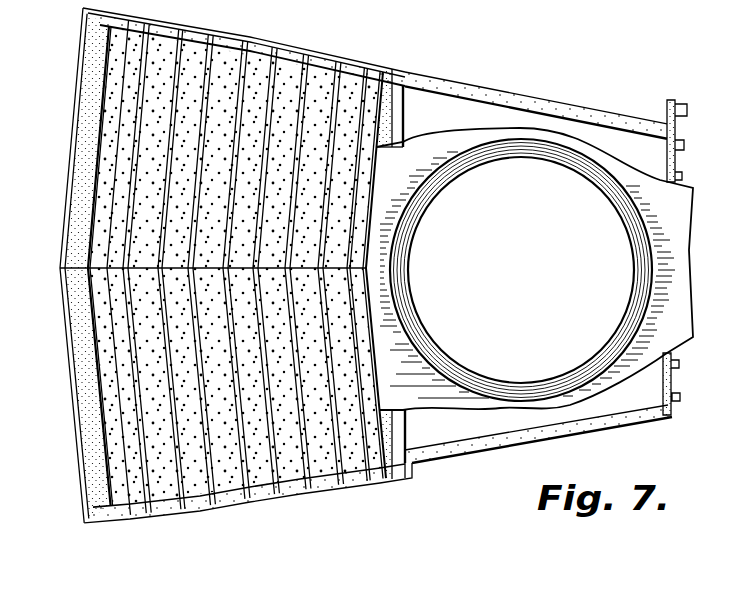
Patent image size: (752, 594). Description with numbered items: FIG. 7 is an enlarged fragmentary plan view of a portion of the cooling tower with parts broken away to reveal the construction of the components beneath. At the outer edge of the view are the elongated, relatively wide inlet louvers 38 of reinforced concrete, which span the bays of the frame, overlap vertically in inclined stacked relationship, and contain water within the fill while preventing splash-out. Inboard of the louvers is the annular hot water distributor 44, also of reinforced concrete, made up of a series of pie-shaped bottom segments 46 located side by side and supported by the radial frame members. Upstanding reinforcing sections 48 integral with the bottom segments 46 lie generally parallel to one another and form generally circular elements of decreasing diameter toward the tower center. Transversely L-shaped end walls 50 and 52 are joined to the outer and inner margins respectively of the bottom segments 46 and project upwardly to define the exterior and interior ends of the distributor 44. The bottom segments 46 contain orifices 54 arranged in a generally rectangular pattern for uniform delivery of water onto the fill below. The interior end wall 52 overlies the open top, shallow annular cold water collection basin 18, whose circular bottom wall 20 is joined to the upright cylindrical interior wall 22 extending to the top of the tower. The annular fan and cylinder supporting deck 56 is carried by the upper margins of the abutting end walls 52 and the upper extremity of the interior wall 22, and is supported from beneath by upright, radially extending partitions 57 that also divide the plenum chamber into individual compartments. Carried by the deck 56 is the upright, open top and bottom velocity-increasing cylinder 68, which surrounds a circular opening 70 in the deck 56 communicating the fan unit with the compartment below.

The cold water collection basin 18 is at (418, 2).
The circular bottom wall 20 is at (522, 0).
The upright interior wall 22 is at (686, 125).
The inlet louvers 38 is at (79, 41).
The hot water distributor 44 is at (219, 58).
The bottom segments 46 is at (293, 66).
The reinforcing sections 48 is at (137, 86).
The exterior end wall 50 is at (102, 90).
The interior end wall 52 is at (403, 114).
The orifices 54 is at (118, 316).
The fan and cylinder supporting deck 56 is at (679, 217).
The partitions 57 is at (556, 101).
The velocity-increasing cylinder 68 is at (541, 154).
The circular opening 70 is at (521, 270).